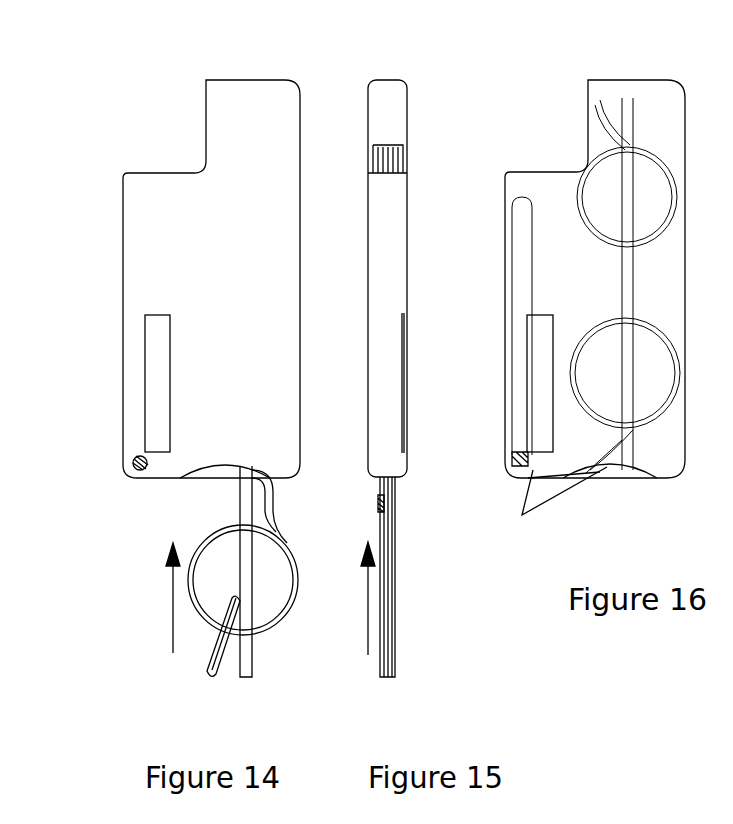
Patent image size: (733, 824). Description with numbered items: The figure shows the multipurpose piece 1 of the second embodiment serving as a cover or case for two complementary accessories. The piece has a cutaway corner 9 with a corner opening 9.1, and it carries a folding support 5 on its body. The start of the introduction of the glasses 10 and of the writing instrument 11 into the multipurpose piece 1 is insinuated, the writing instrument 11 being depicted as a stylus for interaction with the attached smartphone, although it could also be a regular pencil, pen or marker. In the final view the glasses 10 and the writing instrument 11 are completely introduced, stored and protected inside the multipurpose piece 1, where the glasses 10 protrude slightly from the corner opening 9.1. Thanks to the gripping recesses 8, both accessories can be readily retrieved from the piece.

In FIG. 14, the multifunction piece 1 is at (262, 107).
In FIG. 16, the multifunction piece 1 is at (655, 100).
In FIG. 14, the folding support 5 is at (150, 356).
In FIG. 16, the folding support 5 is at (532, 354).
In FIG. 16, the gripping recess 8 is at (553, 513).
In FIG. 14, the cutaway corner 9 is at (173, 140).
In FIG. 16, the cutaway corner 9 is at (537, 147).
In FIG. 15, the corner opening 9.1 is at (373, 147).
In FIG. 14, the glasses 10 is at (287, 647).
In FIG. 15, the glasses 10 is at (412, 648).
In FIG. 14, the writing instrument 11 is at (137, 470).
In FIG. 15, the writing instrument 11 is at (397, 490).
In FIG. 16, the writing instrument 11 is at (520, 459).